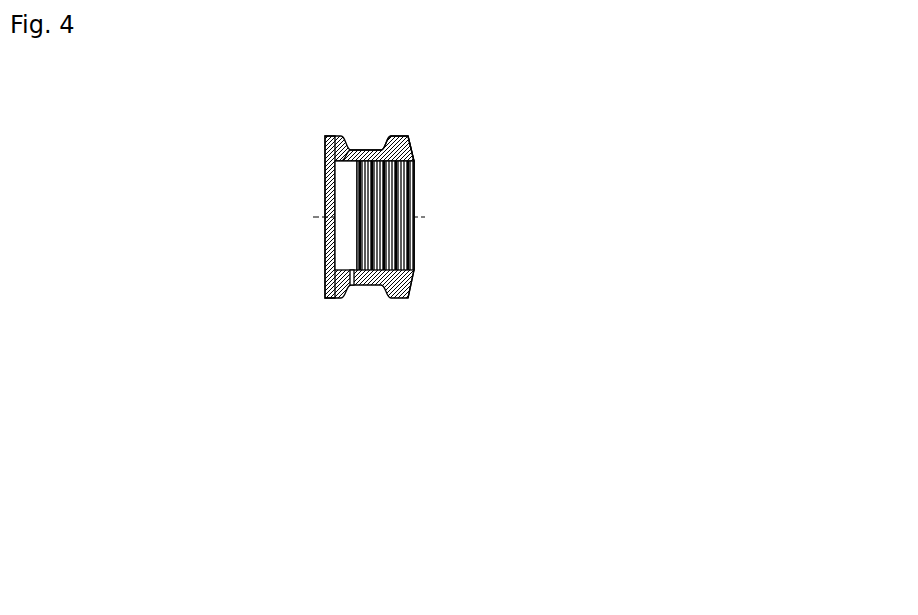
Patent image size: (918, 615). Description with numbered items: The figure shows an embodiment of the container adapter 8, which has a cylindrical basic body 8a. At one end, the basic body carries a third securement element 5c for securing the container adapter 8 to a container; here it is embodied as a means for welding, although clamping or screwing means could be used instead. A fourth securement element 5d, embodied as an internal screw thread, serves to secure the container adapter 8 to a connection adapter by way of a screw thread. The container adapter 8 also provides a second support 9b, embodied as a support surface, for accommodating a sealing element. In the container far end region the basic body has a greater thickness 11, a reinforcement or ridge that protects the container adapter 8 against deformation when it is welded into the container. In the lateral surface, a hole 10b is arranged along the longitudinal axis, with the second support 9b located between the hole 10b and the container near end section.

The container adapter 8 is at (673, 198).
The cylindrical basic body 8a is at (477, 230).
The greater thickness 11 is at (400, 126).
The fourth securement element 5d is at (418, 173).
The third securement element 5c is at (317, 292).
The second support 9b is at (317, 205).
The hole 10b is at (353, 299).